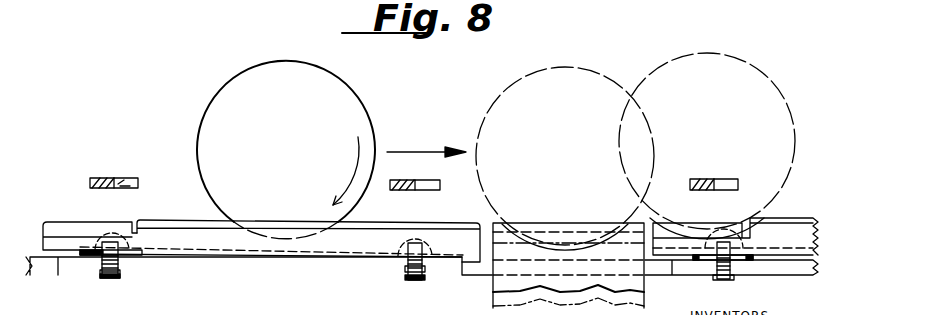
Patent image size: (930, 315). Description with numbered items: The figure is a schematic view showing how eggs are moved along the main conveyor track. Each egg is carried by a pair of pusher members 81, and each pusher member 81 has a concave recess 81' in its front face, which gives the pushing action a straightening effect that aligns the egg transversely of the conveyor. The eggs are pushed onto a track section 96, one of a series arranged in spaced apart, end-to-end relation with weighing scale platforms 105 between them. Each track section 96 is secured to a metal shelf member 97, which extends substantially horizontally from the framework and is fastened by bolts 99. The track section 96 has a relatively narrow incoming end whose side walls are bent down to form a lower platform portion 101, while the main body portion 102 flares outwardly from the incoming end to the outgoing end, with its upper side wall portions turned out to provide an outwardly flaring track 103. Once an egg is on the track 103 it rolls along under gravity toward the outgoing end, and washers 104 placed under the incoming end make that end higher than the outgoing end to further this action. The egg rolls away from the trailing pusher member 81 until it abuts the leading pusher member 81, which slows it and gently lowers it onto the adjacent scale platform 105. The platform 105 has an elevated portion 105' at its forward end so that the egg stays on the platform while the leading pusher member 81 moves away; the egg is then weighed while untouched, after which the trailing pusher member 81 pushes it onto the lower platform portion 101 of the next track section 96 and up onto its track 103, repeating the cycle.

The pusher member 81 is at (105, 167).
The recess 81' is at (138, 166).
The track section 96 is at (163, 222).
The metal shelf member 97 is at (322, 266).
The bolt 99 is at (113, 279).
The lower platform portion 101 is at (57, 224).
The main body portion 102 is at (227, 240).
The track 103 is at (427, 224).
The washer 104 is at (92, 256).
The scale platform 105 is at (568, 246).
The elevated portion 105' is at (731, 239).